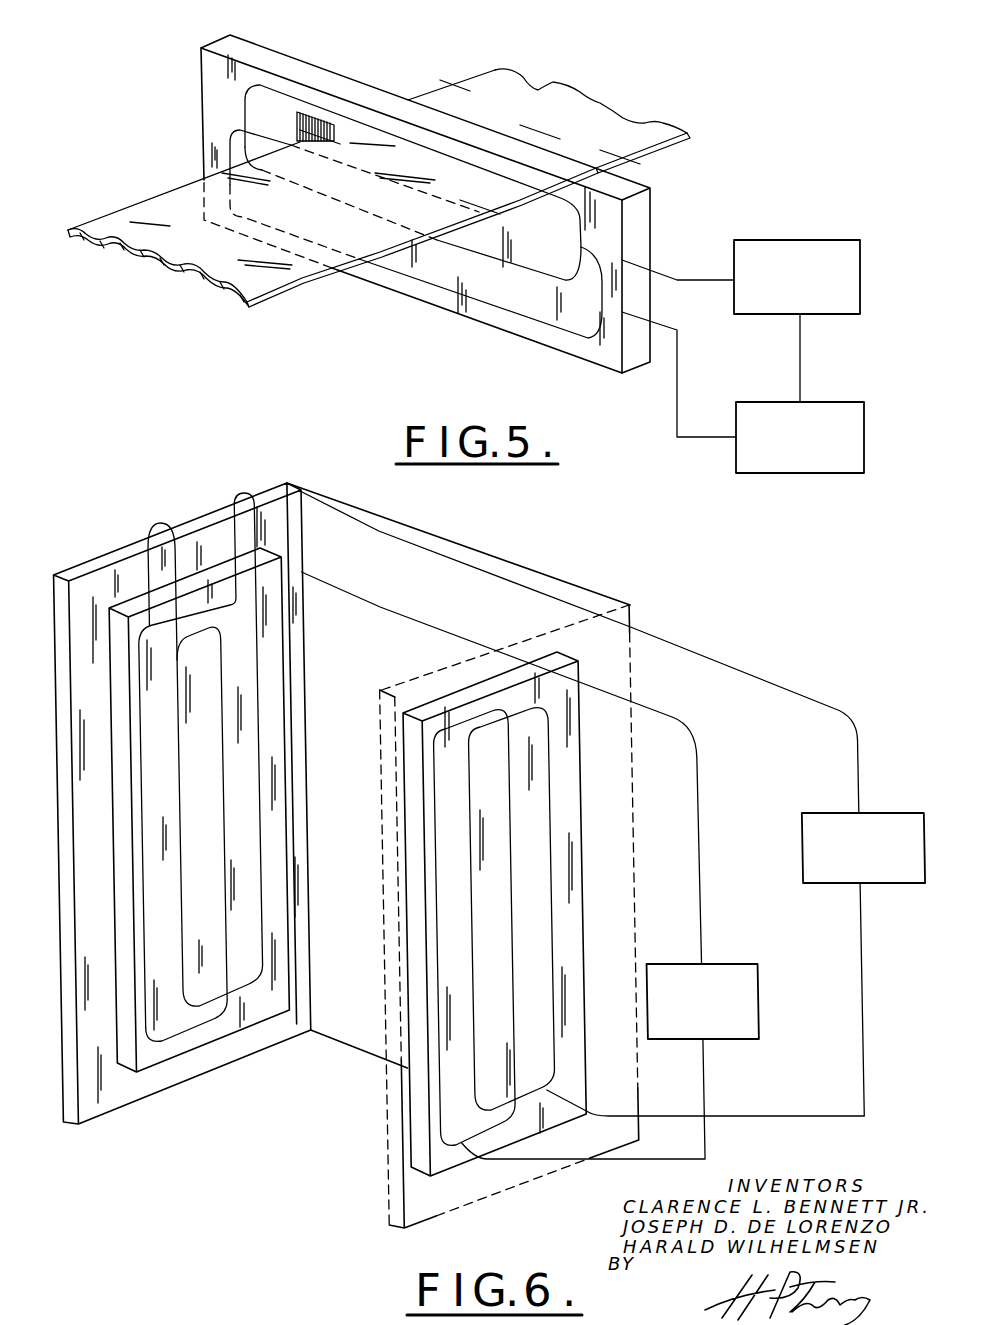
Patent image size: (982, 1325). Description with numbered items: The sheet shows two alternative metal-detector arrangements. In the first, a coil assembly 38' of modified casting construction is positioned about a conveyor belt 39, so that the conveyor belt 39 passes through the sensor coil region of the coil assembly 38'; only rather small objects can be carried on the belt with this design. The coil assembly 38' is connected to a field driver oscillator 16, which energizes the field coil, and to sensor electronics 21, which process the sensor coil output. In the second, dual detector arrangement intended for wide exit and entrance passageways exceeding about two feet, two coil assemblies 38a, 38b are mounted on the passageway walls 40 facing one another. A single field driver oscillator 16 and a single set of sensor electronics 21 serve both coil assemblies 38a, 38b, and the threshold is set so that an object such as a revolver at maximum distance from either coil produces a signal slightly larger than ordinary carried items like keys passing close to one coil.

In FIG. 5, the coil assembly 38' is at (425, 195).
In FIG. 5, the conveyor belt 39 is at (548, 86).
In FIG. 5, the sensor electronics 21 is at (798, 240).
In FIG. 6, the sensor electronics 21 is at (818, 813).
In FIG. 5, the field driver oscillator 16 is at (760, 402).
In FIG. 6, the field driver oscillator 16 is at (724, 964).
In FIG. 6, the coil assembly 38a is at (281, 660).
In FIG. 6, the coil assembly 38b is at (597, 785).
In FIG. 6, the passageway walls 40 is at (109, 1102).